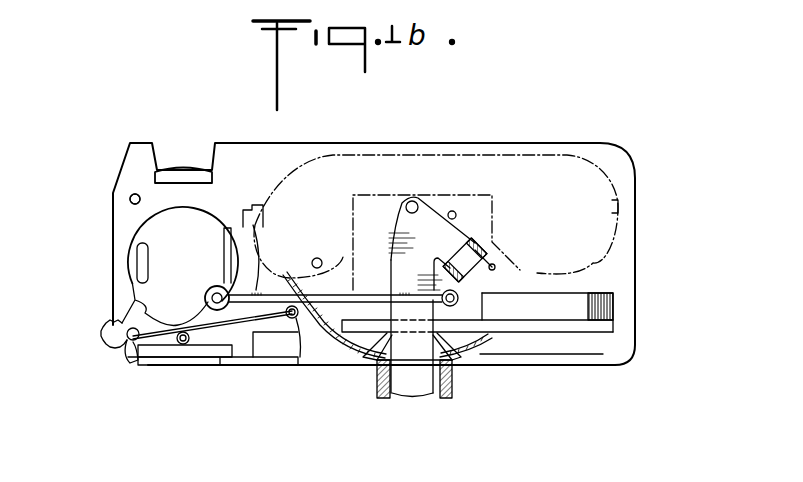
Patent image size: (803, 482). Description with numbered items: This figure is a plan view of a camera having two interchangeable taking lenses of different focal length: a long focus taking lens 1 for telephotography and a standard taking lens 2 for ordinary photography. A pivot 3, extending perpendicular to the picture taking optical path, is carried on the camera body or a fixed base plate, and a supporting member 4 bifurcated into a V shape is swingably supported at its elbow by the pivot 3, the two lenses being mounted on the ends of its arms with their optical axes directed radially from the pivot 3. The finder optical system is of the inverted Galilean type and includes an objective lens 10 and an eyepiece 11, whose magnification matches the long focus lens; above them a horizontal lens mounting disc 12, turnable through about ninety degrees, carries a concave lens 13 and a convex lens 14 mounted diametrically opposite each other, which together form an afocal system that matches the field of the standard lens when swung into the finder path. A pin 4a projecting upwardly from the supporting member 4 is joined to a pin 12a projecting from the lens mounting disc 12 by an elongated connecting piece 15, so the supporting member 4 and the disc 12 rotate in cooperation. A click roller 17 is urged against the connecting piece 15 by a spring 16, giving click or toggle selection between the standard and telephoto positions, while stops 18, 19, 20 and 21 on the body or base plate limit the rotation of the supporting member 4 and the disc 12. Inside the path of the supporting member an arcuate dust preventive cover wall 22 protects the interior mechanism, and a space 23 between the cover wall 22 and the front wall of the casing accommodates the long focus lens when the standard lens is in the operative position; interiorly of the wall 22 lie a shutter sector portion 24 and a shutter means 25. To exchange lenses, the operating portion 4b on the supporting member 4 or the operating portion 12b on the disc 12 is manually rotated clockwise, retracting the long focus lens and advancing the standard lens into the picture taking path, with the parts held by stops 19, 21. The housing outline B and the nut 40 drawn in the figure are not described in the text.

The housing B is at (637, 213).
The long focus taking lens 1 is at (417, 392).
The taking lens 2 is at (480, 273).
The pivot 3 is at (412, 200).
The supporting member 4 is at (402, 228).
The pin 4a is at (485, 293).
The operating portion 4b is at (452, 398).
The objective lens 10 is at (163, 353).
The eyepiece 11 is at (185, 167).
The lens mounting disc 12 is at (202, 220).
The pin 12a is at (205, 298).
The operating portion 12b is at (100, 328).
The concave lens 13 is at (233, 220).
The convex lens 14 is at (130, 260).
The connecting piece 15 is at (262, 275).
The spring 16 is at (246, 326).
The click roller 17 is at (307, 320).
The stop 18 is at (452, 210).
The stop 19 is at (317, 258).
The stop 20 is at (128, 360).
The stop 21 is at (120, 193).
The dust preventive cover wall 22 is at (347, 343).
The space 23 is at (268, 342).
The shutter sector portion 24 is at (613, 330).
The shutter means 25 is at (613, 305).
The nut 40 is at (386, 398).